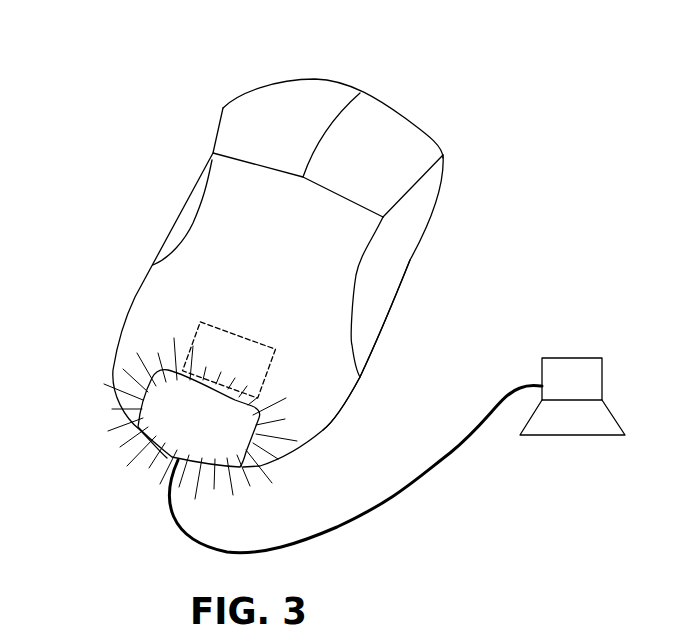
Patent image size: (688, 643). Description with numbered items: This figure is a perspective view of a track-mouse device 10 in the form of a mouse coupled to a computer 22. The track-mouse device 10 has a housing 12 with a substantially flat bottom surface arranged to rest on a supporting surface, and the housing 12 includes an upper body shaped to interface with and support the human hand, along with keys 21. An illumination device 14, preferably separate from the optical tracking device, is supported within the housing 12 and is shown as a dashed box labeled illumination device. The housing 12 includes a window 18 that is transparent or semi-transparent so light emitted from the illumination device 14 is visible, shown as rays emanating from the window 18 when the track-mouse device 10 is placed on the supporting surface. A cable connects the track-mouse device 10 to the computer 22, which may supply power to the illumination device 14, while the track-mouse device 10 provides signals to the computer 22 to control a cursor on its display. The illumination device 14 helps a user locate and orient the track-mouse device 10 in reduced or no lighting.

The track-mouse device 10 is at (423, 74).
The housing 12 is at (347, 403).
The illumination device 14 is at (212, 322).
The window 18 is at (130, 403).
The keys 21 is at (270, 168).
The computer 22 is at (575, 368).